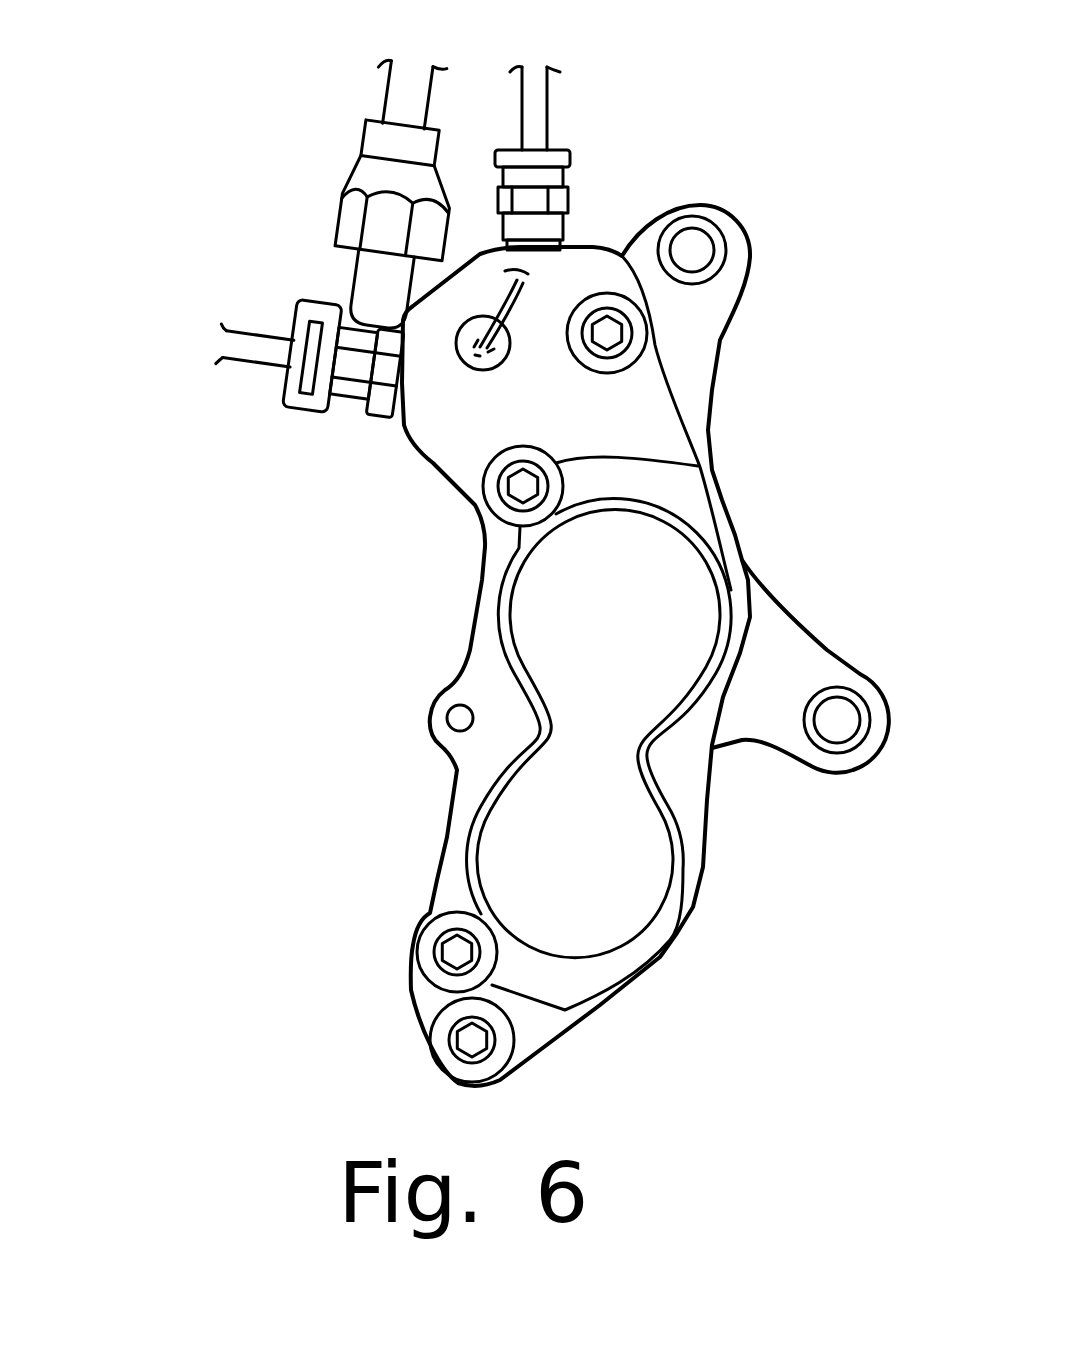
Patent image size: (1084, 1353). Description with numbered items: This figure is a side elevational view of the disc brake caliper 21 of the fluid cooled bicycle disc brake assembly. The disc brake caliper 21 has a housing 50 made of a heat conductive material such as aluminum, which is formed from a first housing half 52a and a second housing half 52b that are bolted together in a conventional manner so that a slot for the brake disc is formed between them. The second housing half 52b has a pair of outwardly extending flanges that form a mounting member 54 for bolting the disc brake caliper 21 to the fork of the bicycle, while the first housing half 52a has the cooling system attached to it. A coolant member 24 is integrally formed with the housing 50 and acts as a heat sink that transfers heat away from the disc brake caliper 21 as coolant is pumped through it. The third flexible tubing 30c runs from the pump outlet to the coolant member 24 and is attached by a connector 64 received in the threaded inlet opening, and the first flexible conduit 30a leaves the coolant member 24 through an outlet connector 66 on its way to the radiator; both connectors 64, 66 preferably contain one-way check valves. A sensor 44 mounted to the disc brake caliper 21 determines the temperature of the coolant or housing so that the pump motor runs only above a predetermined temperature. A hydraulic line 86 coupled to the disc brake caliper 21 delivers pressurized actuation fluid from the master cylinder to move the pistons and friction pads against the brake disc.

The disc brake caliper 21 is at (510, 559).
The coolant member 24 is at (430, 455).
The first flexible conduit 30a is at (548, 93).
The third flexible tubing 30c is at (243, 365).
The sensor 44 is at (493, 370).
The housing 50 is at (462, 765).
The first housing half 52a is at (680, 777).
The second housing half 52b is at (690, 365).
The mounting member 54 is at (707, 317).
The connector 64 is at (343, 410).
The outlet connector 66 is at (570, 197).
The hydraulic line 86 is at (388, 90).